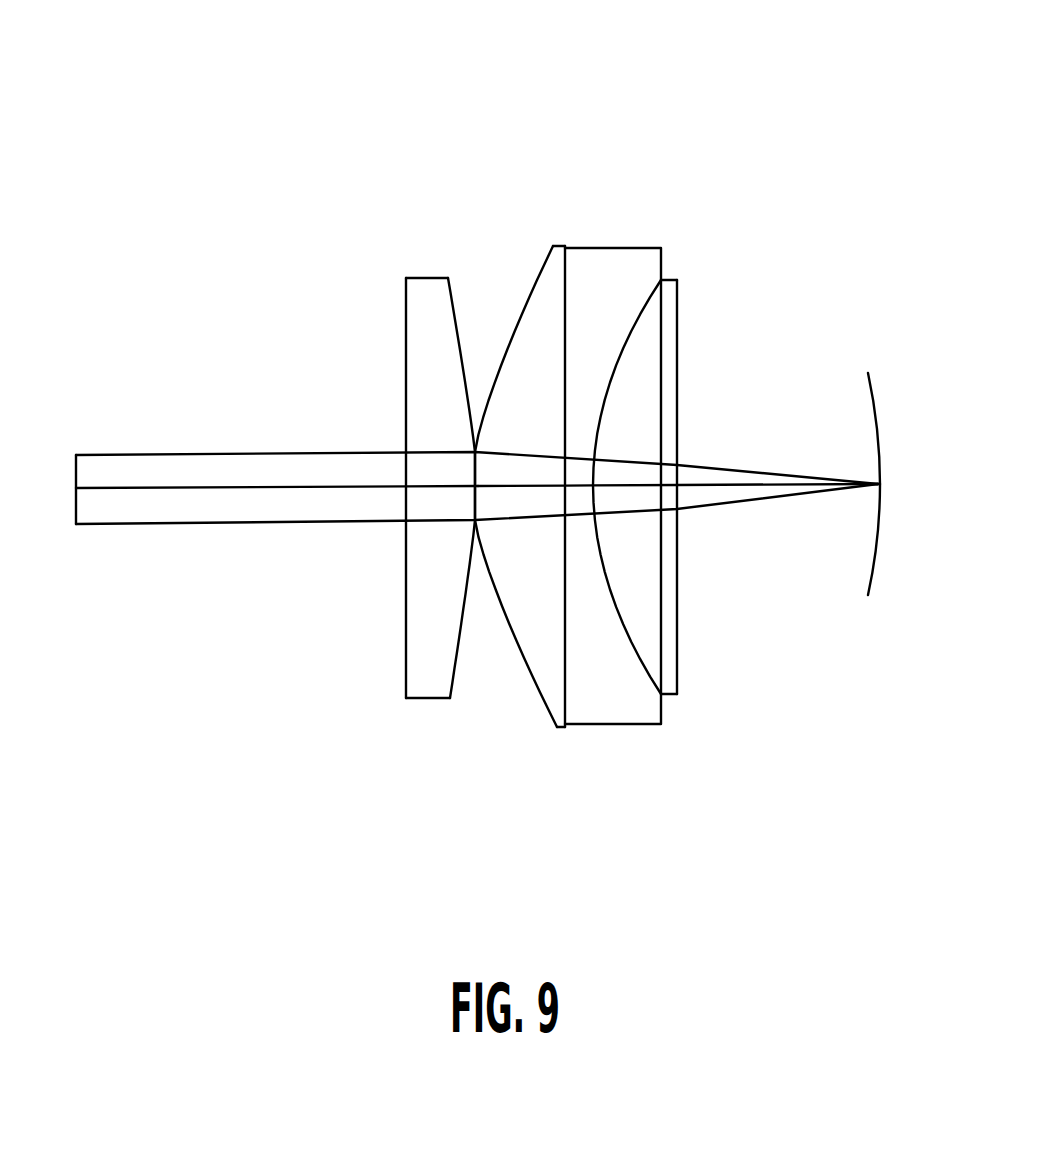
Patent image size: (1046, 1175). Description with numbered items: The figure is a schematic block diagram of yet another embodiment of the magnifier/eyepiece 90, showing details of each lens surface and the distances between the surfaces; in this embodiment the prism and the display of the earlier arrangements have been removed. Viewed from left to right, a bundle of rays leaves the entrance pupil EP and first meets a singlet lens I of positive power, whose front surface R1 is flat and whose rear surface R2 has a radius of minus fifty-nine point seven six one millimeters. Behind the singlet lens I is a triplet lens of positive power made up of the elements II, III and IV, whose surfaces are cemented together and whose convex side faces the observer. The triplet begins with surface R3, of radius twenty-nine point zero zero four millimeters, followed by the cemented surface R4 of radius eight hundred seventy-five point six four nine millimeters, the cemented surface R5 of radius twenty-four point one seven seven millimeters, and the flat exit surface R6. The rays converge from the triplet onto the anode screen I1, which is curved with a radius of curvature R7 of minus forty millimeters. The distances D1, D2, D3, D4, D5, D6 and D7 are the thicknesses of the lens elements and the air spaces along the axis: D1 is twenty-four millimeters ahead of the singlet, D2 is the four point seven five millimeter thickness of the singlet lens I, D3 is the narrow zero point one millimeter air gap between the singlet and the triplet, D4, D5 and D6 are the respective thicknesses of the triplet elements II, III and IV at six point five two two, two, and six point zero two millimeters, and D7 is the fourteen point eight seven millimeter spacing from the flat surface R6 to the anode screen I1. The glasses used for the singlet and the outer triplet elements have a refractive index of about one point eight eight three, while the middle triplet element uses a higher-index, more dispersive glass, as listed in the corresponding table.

The magnifier/eyepiece 90 is at (296, 134).
The entrance pupil EP is at (77, 463).
The singlet lens I is at (402, 425).
The first element of triplet lens II is at (530, 439).
The second element of triplet lens III is at (613, 486).
The third element of triplet lens IV is at (674, 423).
The first lens surface R1 is at (405, 313).
The second lens surface R2 is at (453, 290).
The third lens surface R3 is at (525, 283).
The fourth lens surface R4 is at (563, 280).
The fifth lens surface R5 is at (640, 307).
The sixth lens surface R6 is at (678, 332).
The radius of anode screen R7 is at (877, 400).
The anode screen I1 is at (882, 482).
The first distance D1 is at (227, 489).
The second distance D2 is at (440, 488).
The third distance D3 is at (477, 632).
The fourth distance D4 is at (518, 486).
The fifth distance D5 is at (575, 487).
The sixth distance D6 is at (633, 488).
The seventh distance D7 is at (728, 487).